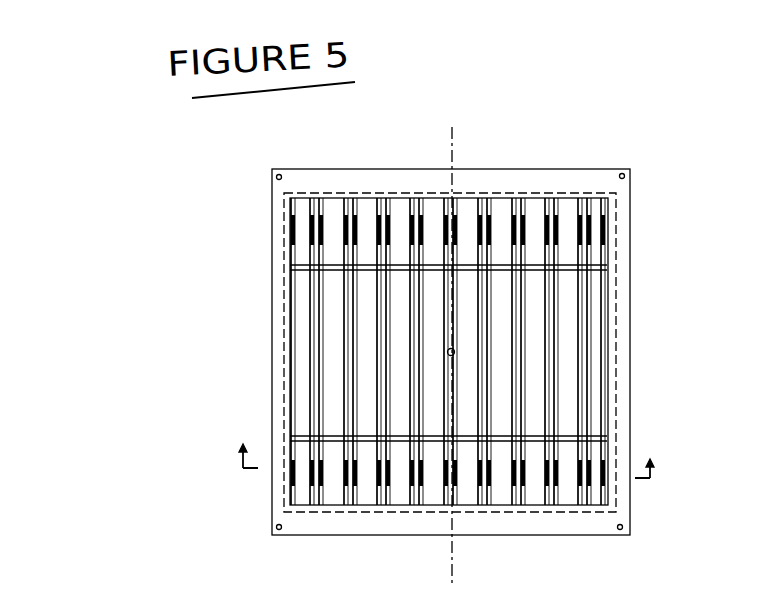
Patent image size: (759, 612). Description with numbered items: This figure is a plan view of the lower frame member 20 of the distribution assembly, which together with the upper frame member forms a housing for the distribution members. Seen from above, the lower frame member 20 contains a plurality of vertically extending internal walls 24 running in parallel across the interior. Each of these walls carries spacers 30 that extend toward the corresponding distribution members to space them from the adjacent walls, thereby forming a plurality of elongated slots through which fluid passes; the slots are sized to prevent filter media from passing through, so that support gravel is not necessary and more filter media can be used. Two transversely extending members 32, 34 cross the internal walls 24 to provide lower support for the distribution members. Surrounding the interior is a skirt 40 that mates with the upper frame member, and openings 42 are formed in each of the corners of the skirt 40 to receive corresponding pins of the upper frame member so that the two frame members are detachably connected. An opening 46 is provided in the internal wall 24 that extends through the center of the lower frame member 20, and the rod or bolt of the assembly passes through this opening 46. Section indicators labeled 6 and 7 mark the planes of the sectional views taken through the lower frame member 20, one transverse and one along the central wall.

The lower frame member 20 is at (236, 218).
The internal walls 24 is at (322, 364).
The spacers 30 is at (392, 233).
The transversely extending member 32 is at (568, 268).
The transversely extending member 34 is at (570, 445).
The skirt 40 is at (554, 180).
The openings 42 is at (276, 168).
The opening 46 is at (458, 352).
The section line 6- 6 is at (446, 449).
The section line 7- 7 is at (452, 127).